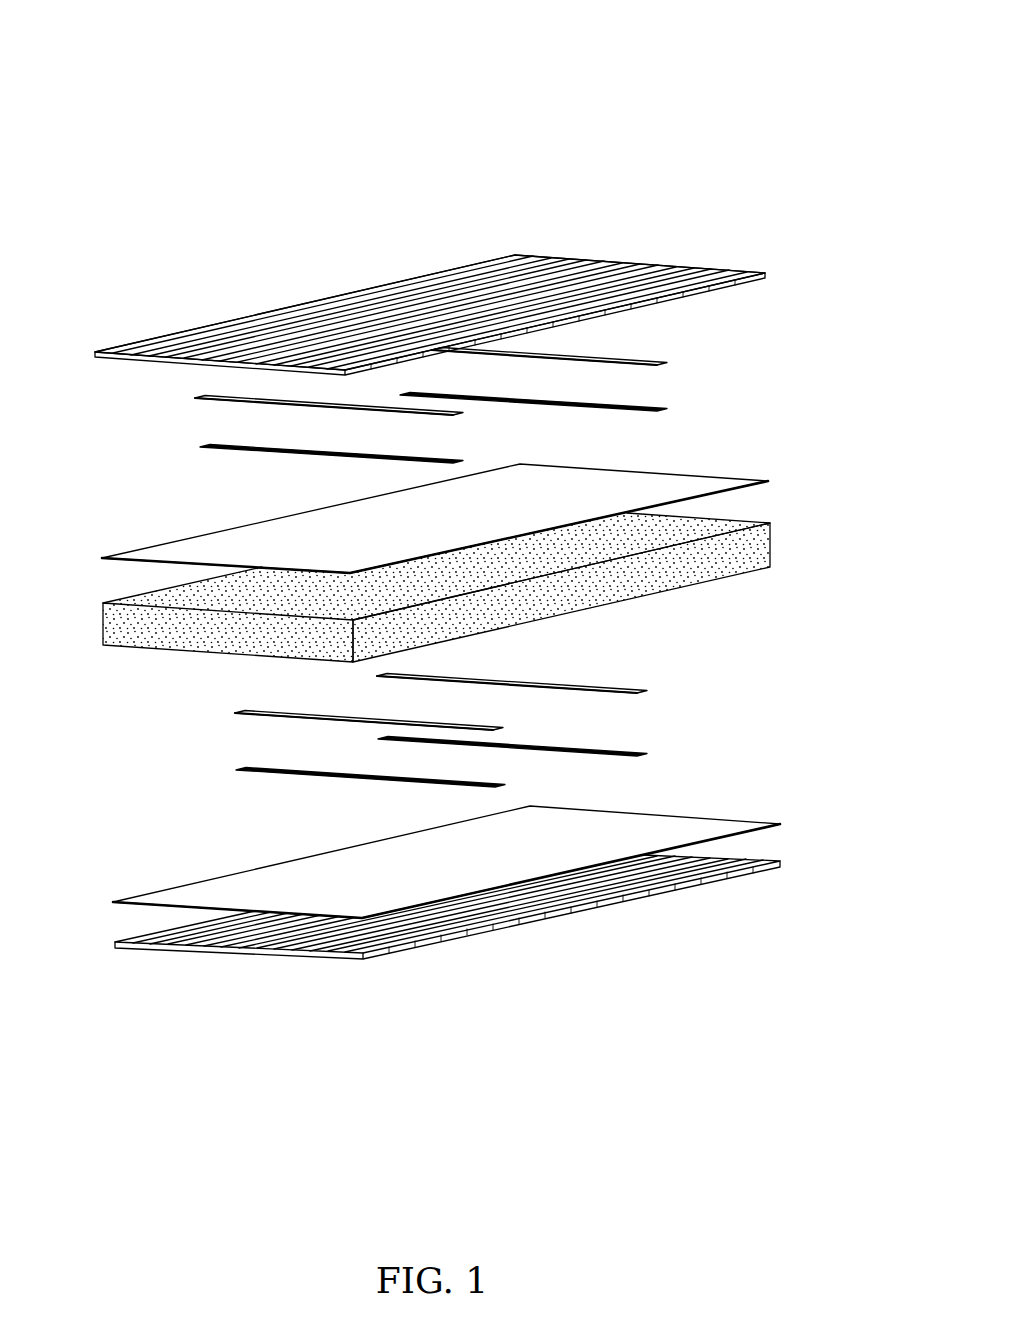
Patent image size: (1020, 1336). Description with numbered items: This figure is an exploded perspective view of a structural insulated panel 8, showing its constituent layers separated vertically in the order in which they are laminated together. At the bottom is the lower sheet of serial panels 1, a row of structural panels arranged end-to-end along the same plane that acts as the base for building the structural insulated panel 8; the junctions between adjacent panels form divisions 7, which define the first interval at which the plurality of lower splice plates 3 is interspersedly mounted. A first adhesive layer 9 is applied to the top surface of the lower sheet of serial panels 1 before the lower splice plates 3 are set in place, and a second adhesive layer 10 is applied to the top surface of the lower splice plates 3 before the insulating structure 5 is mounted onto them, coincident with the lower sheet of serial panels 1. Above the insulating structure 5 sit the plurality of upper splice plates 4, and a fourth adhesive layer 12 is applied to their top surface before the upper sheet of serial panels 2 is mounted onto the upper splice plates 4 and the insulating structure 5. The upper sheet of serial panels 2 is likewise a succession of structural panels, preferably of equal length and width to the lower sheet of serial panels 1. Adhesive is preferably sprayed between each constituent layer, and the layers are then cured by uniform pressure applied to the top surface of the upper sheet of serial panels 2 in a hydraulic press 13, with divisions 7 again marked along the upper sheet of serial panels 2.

The lower sheet of serial panels 1 is at (433, 1012).
The upper sheet of serial panels 2 is at (315, 232).
The plurality of lower splice plates 3 is at (258, 769).
The plurality of upper splice plates 4 is at (203, 447).
The insulating structure 5 is at (137, 644).
The divisions 7 is at (201, 324).
The structural insulated panel 8 is at (545, 128).
The first adhesive layer 9 is at (160, 900).
The second adhesive layer 10 is at (270, 711).
The fourth adhesive layer 12 is at (133, 557).
The hydraulic press 13 is at (194, 397).